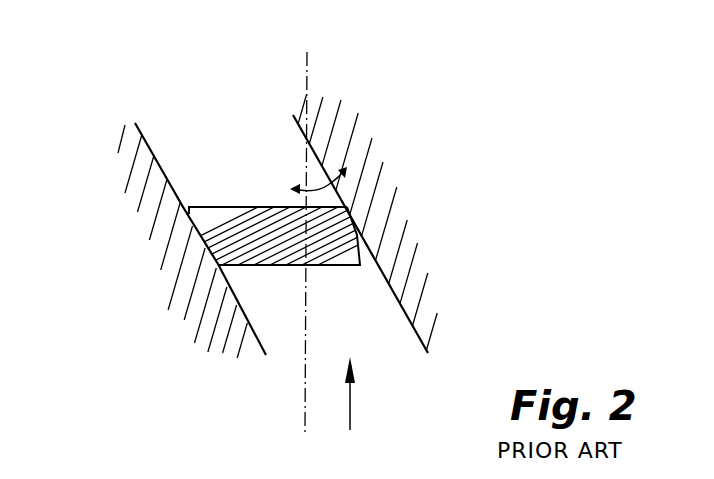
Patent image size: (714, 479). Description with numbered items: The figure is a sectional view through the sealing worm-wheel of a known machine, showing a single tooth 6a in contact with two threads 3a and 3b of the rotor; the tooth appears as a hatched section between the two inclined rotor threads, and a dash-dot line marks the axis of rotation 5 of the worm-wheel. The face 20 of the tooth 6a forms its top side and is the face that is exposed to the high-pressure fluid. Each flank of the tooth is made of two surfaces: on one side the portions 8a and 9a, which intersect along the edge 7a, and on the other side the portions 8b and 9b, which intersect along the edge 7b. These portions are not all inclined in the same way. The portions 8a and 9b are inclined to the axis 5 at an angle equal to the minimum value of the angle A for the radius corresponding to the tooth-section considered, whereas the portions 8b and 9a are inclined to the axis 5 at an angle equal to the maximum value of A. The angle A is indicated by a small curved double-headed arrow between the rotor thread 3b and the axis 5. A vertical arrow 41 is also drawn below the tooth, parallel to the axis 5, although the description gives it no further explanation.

The axis of rotation 5 is at (310, 52).
The rotor thread 3a is at (153, 187).
The flank surface portion 8a is at (190, 207).
The edge 7a is at (203, 214).
The flank surface portion 9a is at (213, 252).
The tooth 6a is at (272, 225).
The high-pressure face of tooth 20 is at (212, 207).
The inclination angle A is at (310, 175).
The rotor thread 3b is at (367, 187).
The flank surface portion 8b is at (352, 212).
The edge 7b is at (365, 228).
The flank surface portion 9b is at (362, 258).
The flow direction arrow 41 is at (370, 396).